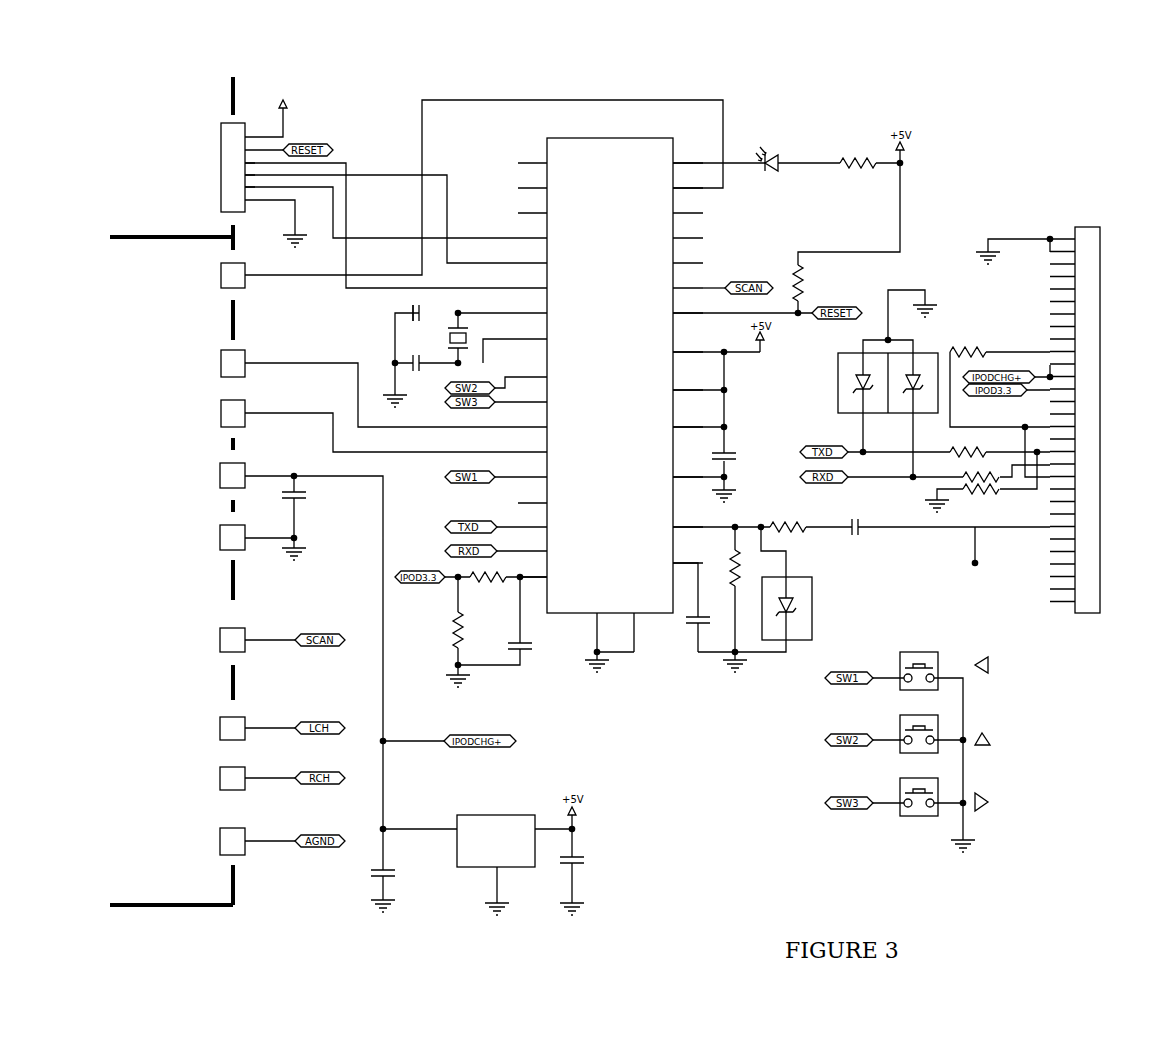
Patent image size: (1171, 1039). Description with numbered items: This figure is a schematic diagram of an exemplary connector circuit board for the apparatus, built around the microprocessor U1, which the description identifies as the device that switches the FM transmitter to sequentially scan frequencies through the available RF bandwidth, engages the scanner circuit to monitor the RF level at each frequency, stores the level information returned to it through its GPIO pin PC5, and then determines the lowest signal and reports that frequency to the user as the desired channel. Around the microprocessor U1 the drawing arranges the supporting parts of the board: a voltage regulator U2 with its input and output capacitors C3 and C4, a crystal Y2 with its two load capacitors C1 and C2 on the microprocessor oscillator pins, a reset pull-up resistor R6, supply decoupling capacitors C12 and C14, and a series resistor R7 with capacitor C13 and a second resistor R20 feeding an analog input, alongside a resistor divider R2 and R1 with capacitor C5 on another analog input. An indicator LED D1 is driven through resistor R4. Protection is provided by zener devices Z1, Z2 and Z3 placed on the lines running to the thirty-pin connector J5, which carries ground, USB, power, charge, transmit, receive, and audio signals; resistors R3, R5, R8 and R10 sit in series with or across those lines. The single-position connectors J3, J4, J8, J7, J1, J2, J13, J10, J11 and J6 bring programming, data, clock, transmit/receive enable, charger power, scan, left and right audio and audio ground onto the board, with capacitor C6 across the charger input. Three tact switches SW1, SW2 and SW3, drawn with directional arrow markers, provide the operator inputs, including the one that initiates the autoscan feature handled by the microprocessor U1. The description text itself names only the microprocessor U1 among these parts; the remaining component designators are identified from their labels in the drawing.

The microprocessor U1 is at (610, 382).
The L78L05 voltage regulator U2 is at (501, 852).
The 6-pin 1mm edge programming connector J3 is at (220, 167).
The DATA connector J4 is at (210, 269).
The CLK connector J8 is at (212, 357).
The T/R-CE connector J7 is at (204, 407).
The IPODCHG+ connector J1 is at (202, 469).
The IPODCHG- connector J2 is at (202, 531).
The SCAN connector J13 is at (210, 633).
The LCH connector J10 is at (211, 722).
The RCH connector J11 is at (211, 772).
The AGND connector J6 is at (207, 835).
The IPOD 30-pin connector J5 is at (1102, 408).
The 3.6864 MHz crystal Y2 is at (422, 350).
The 22pF capacitor C1 is at (416, 315).
The 22pF capacitor C2 is at (420, 365).
The 0.33MFD capacitor C3 is at (405, 877).
The 10MFD capacitor C4 is at (590, 866).
The 0.1MFD capacitor C5 is at (539, 650).
The 10MFD capacitor C6 is at (312, 506).
The 0.1MFD decoupling capacitor C12 is at (743, 460).
The 0.1MFD capacitor C13 is at (862, 527).
The 0.1MFD AREF capacitor C14 is at (689, 633).
The 22K resistor R1 is at (469, 630).
The 10K resistor R2 is at (488, 577).
The 100 ohm resistor R3 is at (970, 444).
The 330 ohm LED resistor R4 is at (857, 165).
The 100 ohm resistor R5 is at (973, 469).
The 10K reset pull-up resistor R6 is at (808, 283).
The 33K resistor R7 is at (788, 526).
The 200 ohm resistor R8 is at (981, 496).
The 549K 1% resistor R10 is at (974, 351).
The 10K resistor R20 is at (746, 566).
The LED SMT 0603 red D1 is at (783, 163).
The BZX84C5V6 dual zener diode Z1 is at (849, 382).
The BZX84C5V6 zener diode Z2 is at (944, 315).
The BZX84C5V6 zener diode Z3 is at (821, 605).
The tact switch SW1 is at (938, 668).
The tact switch SW2 is at (939, 733).
The tact switch SW3 is at (938, 796).